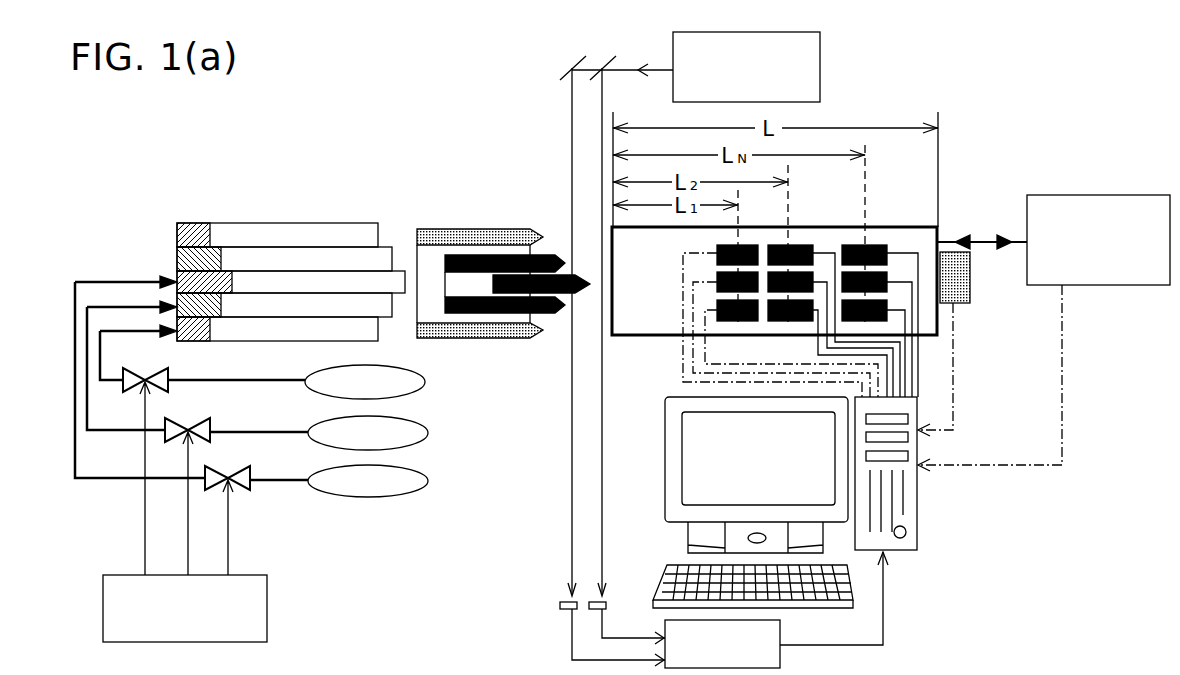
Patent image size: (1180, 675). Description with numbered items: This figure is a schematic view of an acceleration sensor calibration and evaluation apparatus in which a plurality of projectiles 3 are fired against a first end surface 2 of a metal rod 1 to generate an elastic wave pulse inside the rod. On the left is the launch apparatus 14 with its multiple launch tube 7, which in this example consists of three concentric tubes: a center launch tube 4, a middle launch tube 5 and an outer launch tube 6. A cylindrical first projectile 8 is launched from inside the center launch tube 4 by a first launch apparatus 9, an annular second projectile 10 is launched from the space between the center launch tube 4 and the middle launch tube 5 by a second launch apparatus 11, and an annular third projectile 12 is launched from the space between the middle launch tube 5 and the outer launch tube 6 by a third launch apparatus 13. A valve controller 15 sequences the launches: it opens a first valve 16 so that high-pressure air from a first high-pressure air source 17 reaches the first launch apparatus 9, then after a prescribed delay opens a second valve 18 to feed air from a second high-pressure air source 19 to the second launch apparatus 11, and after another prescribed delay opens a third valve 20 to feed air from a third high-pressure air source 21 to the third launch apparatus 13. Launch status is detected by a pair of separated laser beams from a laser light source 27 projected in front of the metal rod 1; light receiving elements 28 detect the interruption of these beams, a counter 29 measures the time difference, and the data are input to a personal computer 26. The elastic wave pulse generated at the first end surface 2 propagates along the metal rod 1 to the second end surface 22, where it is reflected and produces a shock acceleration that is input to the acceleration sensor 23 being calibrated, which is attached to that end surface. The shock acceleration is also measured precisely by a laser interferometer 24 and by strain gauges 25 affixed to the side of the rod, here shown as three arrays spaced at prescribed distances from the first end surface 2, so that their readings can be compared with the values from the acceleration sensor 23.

The metal rod 1 is at (897, 225).
The first end surface 2 is at (614, 304).
The projectiles 3 is at (503, 335).
The center launch tube 4 is at (291, 231).
The middle launch tube 5 is at (335, 247).
The outer launch tube 6 is at (313, 223).
The multiple launch tube 7 is at (291, 225).
The first projectile 8 is at (541, 337).
The first launch apparatus 9 is at (176, 273).
The second projectile 10 is at (515, 313).
The second launch apparatus 11 is at (176, 258).
The third projectile 12 is at (455, 338).
The third launch apparatus 13 is at (180, 232).
The launch apparatus 14 is at (128, 258).
The valve controller 15 is at (267, 585).
The first valve 16 is at (248, 474).
The first high-pressure air source 17 is at (425, 490).
The second valve 18 is at (208, 422).
The second high-pressure air source 19 is at (423, 447).
The third valve 20 is at (168, 375).
The third high-pressure air source 21 is at (417, 395).
The second end surface 22 is at (933, 325).
The acceleration sensor 23 is at (963, 303).
The laser interferometer 24 is at (1027, 216).
The strain gauge 25 is at (778, 244).
The personal computer 26 is at (950, 511).
The laser light source 27 is at (824, 53).
The light receiving elements 28 is at (560, 603).
The counter 29 is at (783, 633).